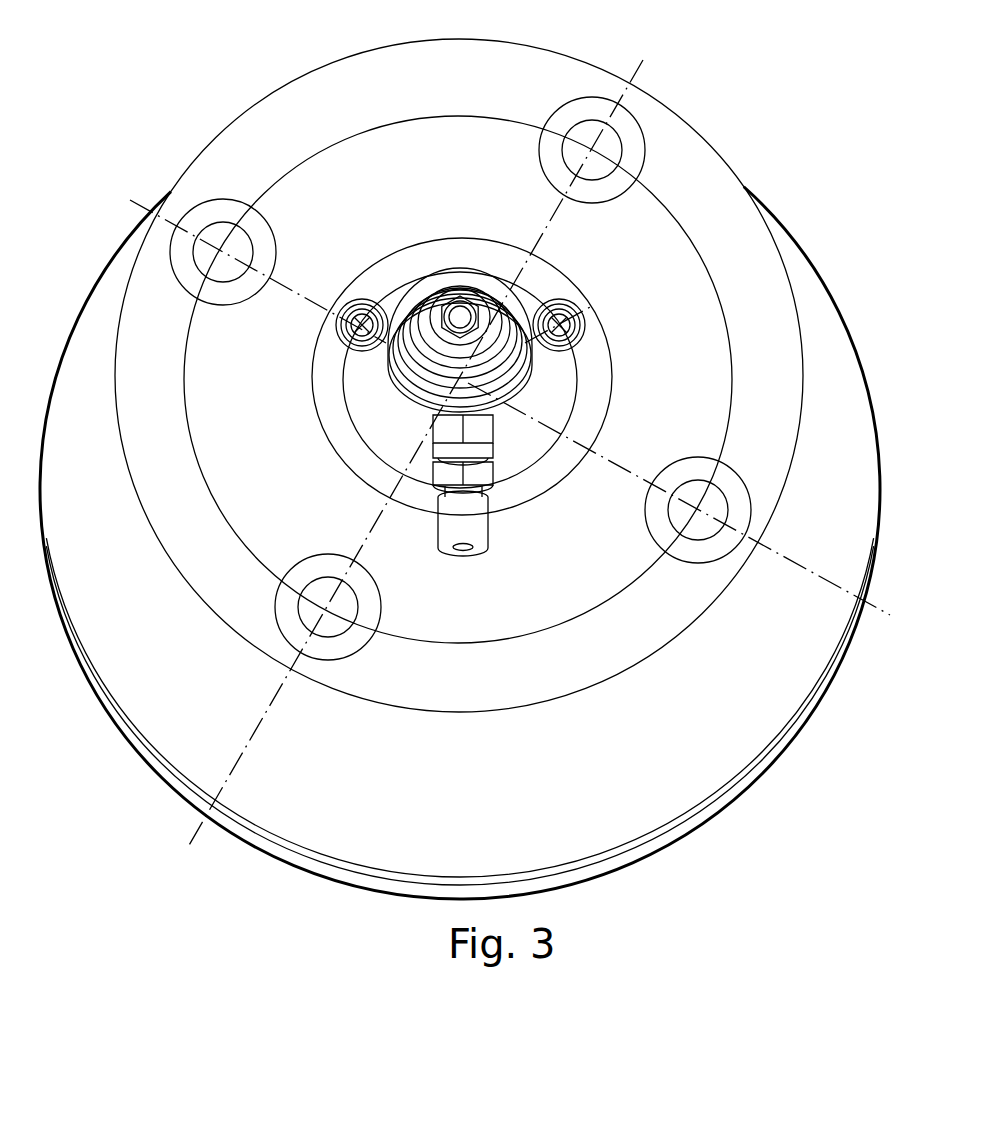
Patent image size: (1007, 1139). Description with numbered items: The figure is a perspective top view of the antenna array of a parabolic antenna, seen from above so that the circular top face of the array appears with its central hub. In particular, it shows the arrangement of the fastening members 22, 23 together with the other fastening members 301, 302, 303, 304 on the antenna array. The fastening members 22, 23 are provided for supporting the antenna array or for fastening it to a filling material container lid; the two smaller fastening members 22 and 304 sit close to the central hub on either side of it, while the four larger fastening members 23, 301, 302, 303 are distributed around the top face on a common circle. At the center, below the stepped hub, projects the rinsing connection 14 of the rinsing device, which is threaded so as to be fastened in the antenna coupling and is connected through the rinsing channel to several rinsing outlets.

The rinsing connection 14 is at (477, 525).
The fastening member 22 is at (354, 301).
The fastening member 23 is at (207, 202).
The fastening member 301 is at (635, 117).
The fastening member 302 is at (747, 483).
The fastening member 303 is at (337, 658).
The fastening member 304 is at (562, 300).